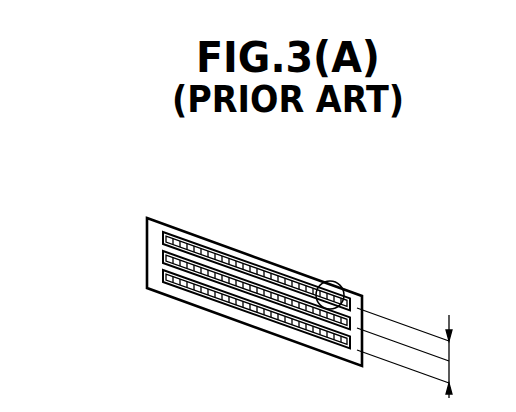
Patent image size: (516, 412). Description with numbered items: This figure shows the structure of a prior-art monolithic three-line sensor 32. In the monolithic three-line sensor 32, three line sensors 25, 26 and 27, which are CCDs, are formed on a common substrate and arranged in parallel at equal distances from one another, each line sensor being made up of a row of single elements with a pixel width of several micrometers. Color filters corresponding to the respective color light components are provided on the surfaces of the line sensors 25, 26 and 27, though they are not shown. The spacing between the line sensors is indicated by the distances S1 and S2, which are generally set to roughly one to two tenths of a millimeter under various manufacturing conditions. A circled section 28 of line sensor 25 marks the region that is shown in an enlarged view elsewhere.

The monolithic three-line sensor 32 is at (147, 252).
The line sensor 25 is at (183, 240).
The line sensor 26 is at (232, 272).
The line sensor 27 is at (222, 294).
The section 28 is at (338, 281).
The distance S1 is at (422, 353).
The distance S2 is at (422, 372).